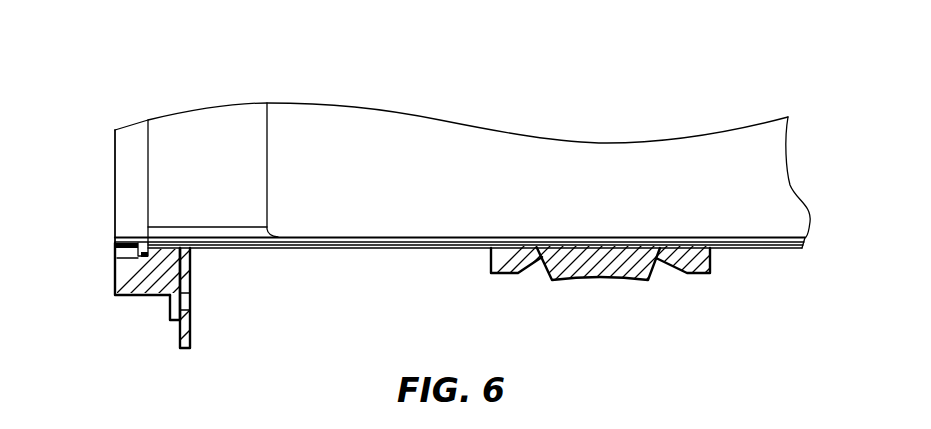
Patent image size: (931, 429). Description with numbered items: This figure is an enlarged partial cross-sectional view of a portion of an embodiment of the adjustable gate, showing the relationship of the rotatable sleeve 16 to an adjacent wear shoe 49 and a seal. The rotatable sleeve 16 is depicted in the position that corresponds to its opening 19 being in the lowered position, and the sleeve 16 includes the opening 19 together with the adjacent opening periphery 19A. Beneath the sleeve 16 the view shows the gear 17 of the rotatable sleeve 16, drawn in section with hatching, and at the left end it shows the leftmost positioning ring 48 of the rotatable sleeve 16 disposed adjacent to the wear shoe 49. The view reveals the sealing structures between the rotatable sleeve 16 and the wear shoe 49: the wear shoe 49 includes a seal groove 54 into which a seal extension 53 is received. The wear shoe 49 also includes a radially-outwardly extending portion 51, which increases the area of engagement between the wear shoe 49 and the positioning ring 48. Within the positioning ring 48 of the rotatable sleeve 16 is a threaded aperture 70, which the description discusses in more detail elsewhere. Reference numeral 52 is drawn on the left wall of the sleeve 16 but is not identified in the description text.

The rotatable sleeve 16 is at (386, 237).
The gear 17 is at (596, 282).
The opening 19 is at (493, 145).
The opening periphery 19A is at (205, 130).
The positioning ring 48 is at (187, 332).
The wear shoe 49 is at (130, 268).
The radially-outwardly extending portion 51 is at (168, 308).
The left wall 52 is at (117, 197).
The seal extension 53 is at (118, 253).
The seal groove 54 is at (150, 257).
The threaded aperture 70 is at (192, 300).